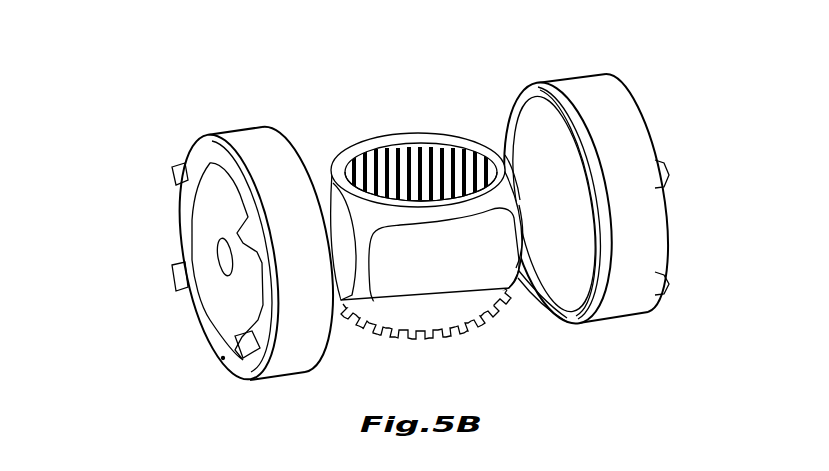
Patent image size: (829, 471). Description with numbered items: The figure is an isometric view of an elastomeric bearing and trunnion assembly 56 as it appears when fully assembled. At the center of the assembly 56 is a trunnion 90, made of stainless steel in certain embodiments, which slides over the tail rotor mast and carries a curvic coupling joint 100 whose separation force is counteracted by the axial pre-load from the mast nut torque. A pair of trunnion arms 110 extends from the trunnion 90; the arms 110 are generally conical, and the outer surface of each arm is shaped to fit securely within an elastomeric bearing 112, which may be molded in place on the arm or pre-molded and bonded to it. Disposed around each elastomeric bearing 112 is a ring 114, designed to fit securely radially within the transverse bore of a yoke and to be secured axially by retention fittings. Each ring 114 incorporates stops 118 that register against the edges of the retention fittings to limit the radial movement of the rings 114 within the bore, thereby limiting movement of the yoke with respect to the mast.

The elastomeric bearing and trunnion assembly 56 is at (395, 93).
The trunnion 90 is at (452, 133).
The curvic coupling joint 100 is at (477, 330).
The trunnion arm 110 is at (223, 266).
The elastomeric bearing 112 is at (533, 135).
The ring 114 is at (612, 330).
The stop 118 is at (172, 173).